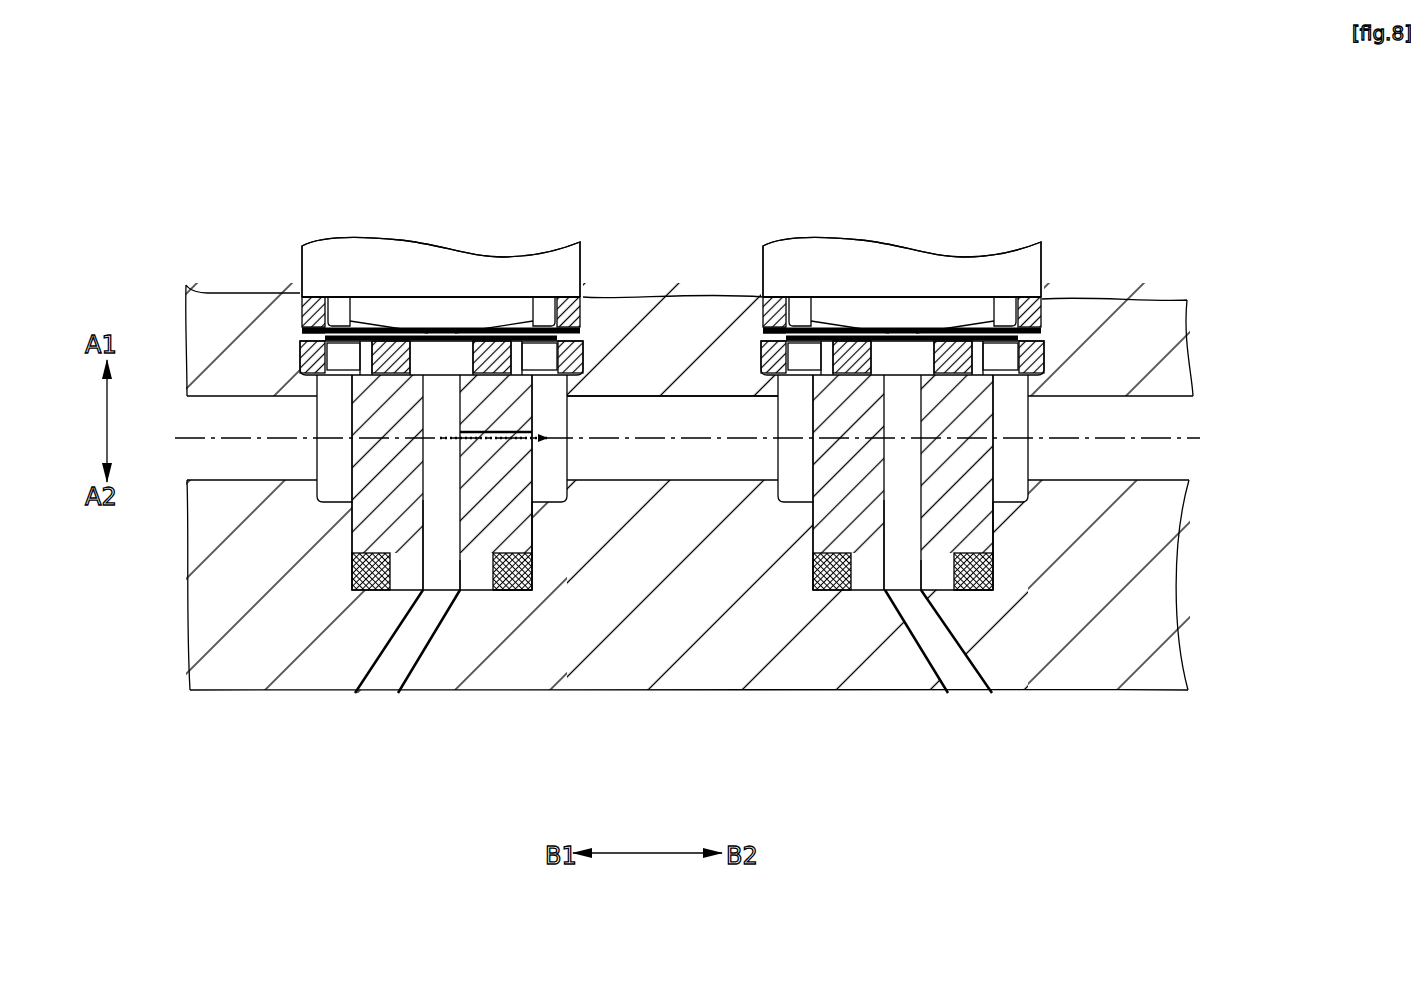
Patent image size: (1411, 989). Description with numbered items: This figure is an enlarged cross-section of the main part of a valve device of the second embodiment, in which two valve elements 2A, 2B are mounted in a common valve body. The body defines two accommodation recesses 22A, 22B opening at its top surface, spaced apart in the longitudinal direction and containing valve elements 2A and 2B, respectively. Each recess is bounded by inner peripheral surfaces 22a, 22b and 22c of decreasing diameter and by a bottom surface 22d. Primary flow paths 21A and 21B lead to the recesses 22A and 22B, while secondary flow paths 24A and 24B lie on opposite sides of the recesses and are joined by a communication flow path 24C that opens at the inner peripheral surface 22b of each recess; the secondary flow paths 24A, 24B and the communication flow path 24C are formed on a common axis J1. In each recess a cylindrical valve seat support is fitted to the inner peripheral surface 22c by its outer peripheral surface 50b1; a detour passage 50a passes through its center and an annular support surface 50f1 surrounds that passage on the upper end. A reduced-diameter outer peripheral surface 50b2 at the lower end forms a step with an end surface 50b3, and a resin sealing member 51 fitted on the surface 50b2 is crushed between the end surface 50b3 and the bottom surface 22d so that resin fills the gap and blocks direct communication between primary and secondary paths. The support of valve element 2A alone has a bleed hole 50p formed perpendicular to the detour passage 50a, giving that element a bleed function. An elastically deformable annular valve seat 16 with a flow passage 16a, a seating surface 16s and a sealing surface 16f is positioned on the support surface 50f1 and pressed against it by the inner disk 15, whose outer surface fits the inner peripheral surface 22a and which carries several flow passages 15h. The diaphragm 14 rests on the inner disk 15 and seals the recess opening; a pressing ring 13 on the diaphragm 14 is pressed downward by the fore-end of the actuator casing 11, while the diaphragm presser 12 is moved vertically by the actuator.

The valve element 2A is at (393, 213).
The valve element 2B is at (878, 213).
The casing 11 is at (546, 248).
The diaphragm presser 12 is at (493, 300).
The pressing ring 13 is at (583, 330).
The diaphragm 14 is at (300, 296).
The inner disk 15 is at (330, 352).
The flow passage 15h is at (545, 342).
The valve seat 16 is at (430, 333).
The flow passage 16a is at (472, 307).
The seating surface 16s is at (385, 345).
The sealing surface 16f is at (332, 415).
The primary flow path 21A is at (385, 672).
The primary flow path 21B is at (940, 672).
The inner peripheral surface 22a is at (300, 400).
The inner peripheral surface 22b is at (352, 508).
The inner peripheral surface 22c is at (352, 563).
The bottom surface 22d is at (455, 592).
The accommodation recess 22A is at (618, 405).
The accommodation recess 22B is at (650, 402).
The secondary flow path 24A is at (188, 482).
The secondary flow path 24B is at (1190, 405).
The communication flow path 24C is at (703, 600).
The detour passage 50a is at (462, 592).
The outer peripheral surface 50b1 is at (437, 527).
The outer peripheral surface 50b2 is at (517, 590).
The end surface 50b3 is at (533, 523).
The support surface 50f1 is at (300, 333).
The bleed hole 50p is at (560, 445).
The sealing member 51 is at (355, 592).
The common axis J1 is at (1160, 432).